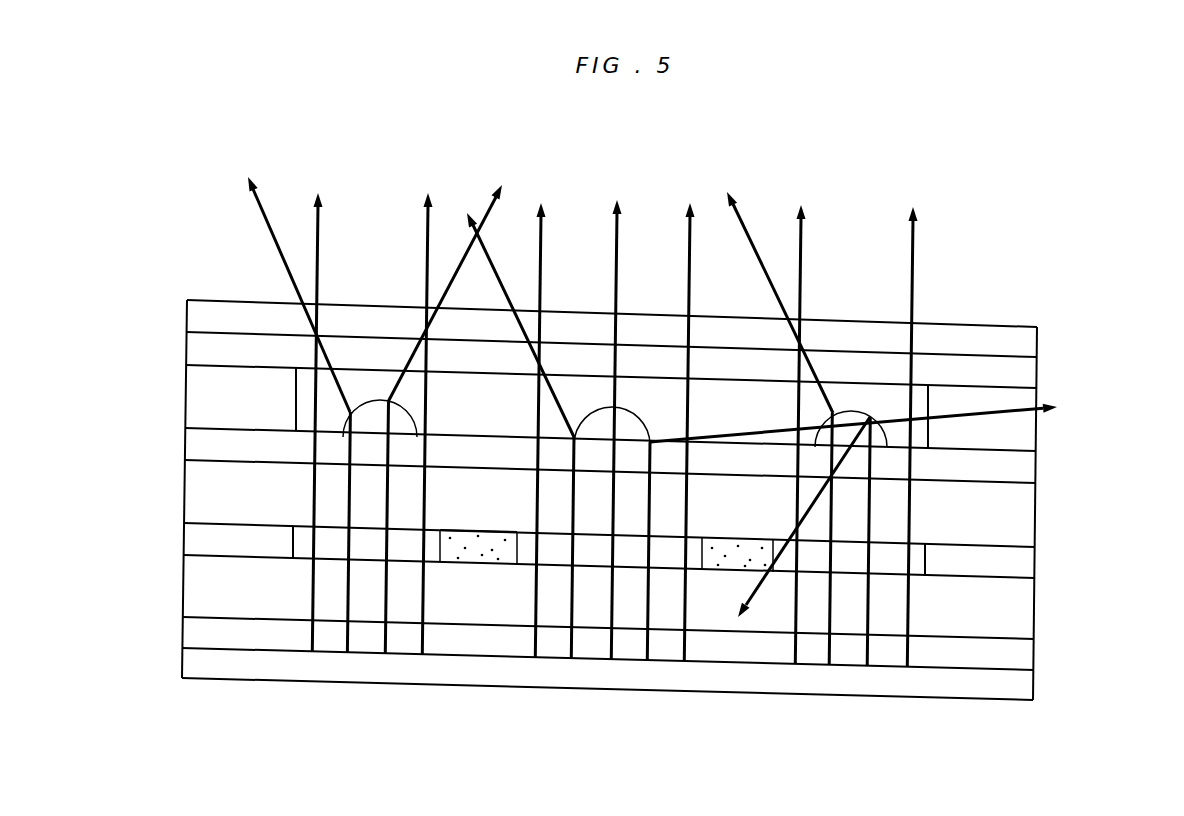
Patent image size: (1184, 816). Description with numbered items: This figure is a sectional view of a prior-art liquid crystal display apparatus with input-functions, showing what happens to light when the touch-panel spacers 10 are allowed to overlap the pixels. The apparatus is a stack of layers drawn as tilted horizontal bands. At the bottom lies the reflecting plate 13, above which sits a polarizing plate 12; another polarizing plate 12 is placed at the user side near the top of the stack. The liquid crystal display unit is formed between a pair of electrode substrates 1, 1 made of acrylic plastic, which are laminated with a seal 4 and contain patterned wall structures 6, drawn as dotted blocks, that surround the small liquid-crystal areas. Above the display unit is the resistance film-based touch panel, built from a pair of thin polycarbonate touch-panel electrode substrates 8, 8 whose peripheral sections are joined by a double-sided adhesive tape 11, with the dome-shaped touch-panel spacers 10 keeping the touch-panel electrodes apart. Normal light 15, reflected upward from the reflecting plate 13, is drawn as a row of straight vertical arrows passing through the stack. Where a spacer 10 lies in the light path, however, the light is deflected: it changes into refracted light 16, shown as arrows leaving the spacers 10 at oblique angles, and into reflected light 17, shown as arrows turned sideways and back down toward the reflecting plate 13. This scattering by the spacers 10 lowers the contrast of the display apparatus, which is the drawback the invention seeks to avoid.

The electrode substrate 1 is at (214, 490).
The seal 4 is at (1017, 568).
The wall structure 6 is at (482, 552).
The touch-panel electrode substrate 8 is at (1025, 373).
The touch-panel spacer 10 is at (628, 422).
The double-sided adhesive tape 11 is at (214, 395).
The polarizing plate 12 is at (1023, 345).
The reflecting plate 13 is at (1013, 690).
The normal light 15 is at (802, 245).
The refracted light 16 is at (267, 223).
The reflected light 17 is at (968, 413).